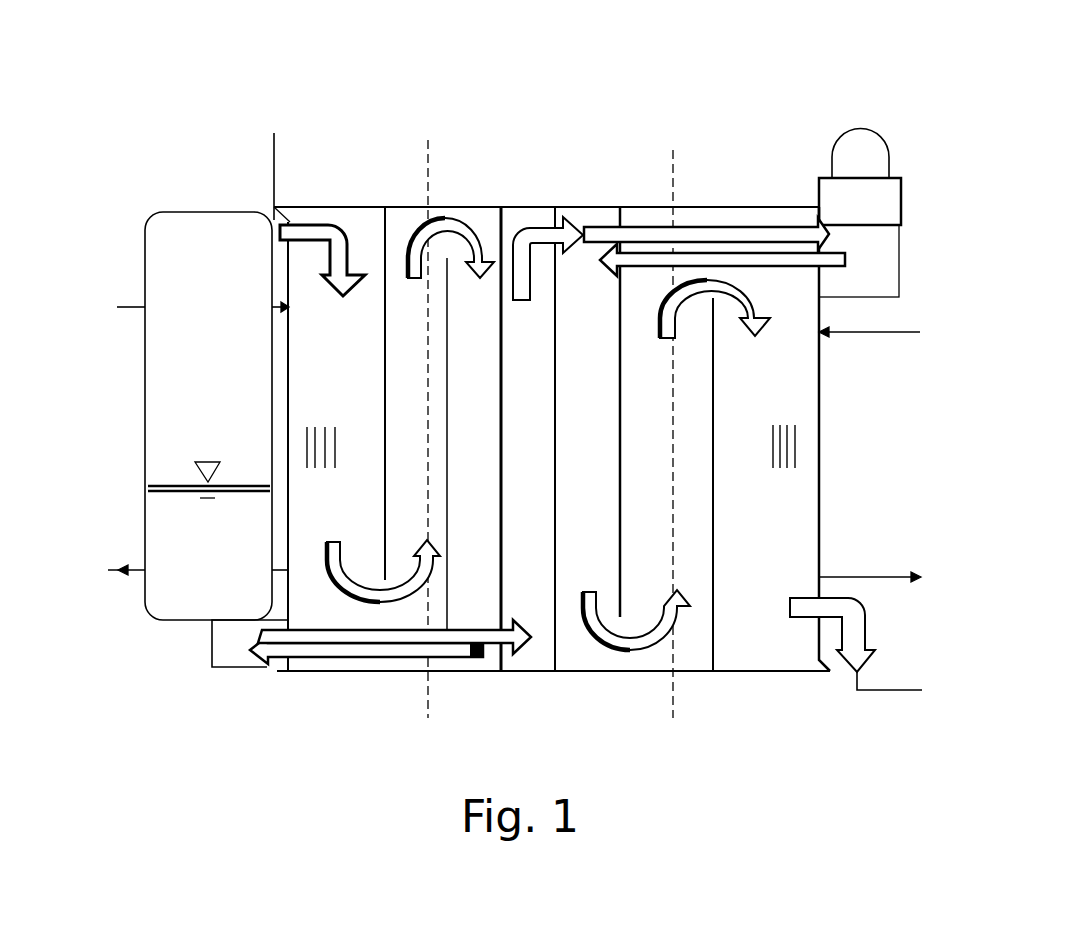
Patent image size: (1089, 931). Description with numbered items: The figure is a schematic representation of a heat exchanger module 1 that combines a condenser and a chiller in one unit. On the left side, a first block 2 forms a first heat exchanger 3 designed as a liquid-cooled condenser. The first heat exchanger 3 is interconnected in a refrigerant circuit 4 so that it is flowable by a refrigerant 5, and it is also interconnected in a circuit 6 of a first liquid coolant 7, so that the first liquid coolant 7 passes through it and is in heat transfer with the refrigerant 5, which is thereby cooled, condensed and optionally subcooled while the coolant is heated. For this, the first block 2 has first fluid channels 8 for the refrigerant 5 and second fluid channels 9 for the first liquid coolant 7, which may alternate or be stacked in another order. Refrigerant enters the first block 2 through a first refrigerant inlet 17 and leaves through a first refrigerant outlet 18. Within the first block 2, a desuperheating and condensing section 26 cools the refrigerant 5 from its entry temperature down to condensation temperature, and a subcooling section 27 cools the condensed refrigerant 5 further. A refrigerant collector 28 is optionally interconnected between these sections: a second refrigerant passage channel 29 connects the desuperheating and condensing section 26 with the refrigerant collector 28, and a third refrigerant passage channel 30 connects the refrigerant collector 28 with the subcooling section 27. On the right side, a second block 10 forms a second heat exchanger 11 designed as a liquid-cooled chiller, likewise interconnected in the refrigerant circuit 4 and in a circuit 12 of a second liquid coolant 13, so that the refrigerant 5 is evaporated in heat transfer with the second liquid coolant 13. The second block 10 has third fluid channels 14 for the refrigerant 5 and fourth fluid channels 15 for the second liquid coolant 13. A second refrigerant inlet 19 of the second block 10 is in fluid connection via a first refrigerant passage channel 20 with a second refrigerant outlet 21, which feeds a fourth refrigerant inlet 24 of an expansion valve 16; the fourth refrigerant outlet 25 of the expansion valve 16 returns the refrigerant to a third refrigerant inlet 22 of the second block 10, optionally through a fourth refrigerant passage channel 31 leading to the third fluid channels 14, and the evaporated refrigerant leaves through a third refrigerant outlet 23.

The heat exchanger module 1 is at (963, 116).
The first block 2 is at (366, 206).
The first heat exchanger 3 is at (333, 206).
The refrigerant circuit 4 is at (274, 165).
The refrigerant 5 is at (467, 218).
The circuit of first liquid coolant 6 is at (120, 306).
The first liquid coolant 7 is at (126, 312).
The first fluid channels 8 is at (310, 430).
The second fluid channels 9 is at (318, 450).
The second block 10 is at (722, 206).
The second heat exchanger 11 is at (685, 206).
The circuit of second liquid coolant 12 is at (903, 332).
The second liquid coolant 13 is at (856, 335).
The third fluid channels 14 is at (798, 442).
The fourth fluid channels 15 is at (792, 463).
The expansion valve 16 is at (893, 212).
The first refrigerant inlet 17 is at (297, 226).
The first refrigerant outlet 18 is at (540, 235).
The second refrigerant inlet 19 is at (562, 210).
The first refrigerant passage channel 20 is at (640, 226).
The second refrigerant outlet 21 is at (800, 237).
The third refrigerant inlet 22 is at (822, 282).
The third refrigerant outlet 23 is at (800, 614).
The fourth refrigerant inlet 24 is at (815, 235).
The fourth refrigerant outlet 25 is at (832, 260).
The desuperheating and condensing section 26 is at (393, 218).
The subcooling section 27 is at (540, 650).
The refrigerant collector 28 is at (190, 215).
The second refrigerant passage channel 29 is at (335, 655).
The third refrigerant passage channel 30 is at (415, 650).
The fourth refrigerant passage channel 31 is at (641, 262).